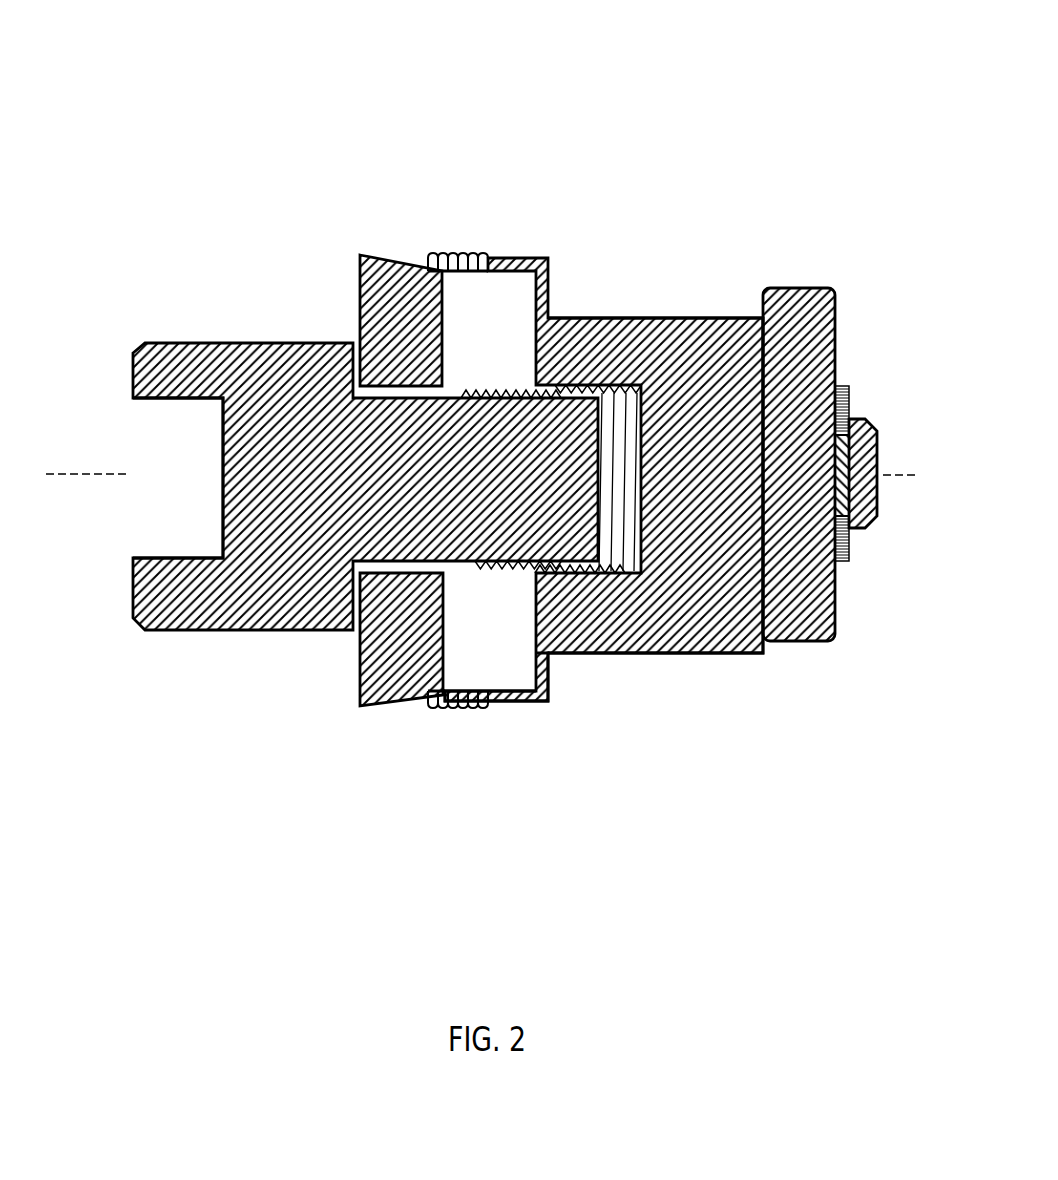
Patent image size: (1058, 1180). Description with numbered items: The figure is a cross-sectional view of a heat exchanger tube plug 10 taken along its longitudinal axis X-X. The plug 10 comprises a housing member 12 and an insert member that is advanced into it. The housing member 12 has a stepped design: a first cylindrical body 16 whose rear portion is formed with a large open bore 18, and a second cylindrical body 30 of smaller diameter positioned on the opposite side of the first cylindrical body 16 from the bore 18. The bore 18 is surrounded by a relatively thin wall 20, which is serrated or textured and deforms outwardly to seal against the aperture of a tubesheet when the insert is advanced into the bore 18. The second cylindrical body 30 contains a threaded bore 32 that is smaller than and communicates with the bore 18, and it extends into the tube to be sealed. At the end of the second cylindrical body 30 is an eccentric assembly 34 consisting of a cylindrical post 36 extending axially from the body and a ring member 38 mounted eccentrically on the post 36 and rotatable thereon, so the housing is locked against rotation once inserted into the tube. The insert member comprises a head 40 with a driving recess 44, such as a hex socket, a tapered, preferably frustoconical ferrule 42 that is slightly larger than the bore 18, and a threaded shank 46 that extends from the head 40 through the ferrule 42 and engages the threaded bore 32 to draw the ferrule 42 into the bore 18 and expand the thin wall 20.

The heat exchanger tube plug 10 is at (522, 108).
The housing member 12 is at (500, 252).
The first cylindrical body 16 is at (540, 662).
The open bore 18 is at (462, 282).
The thin wall 20 is at (440, 700).
The second cylindrical body 30 is at (632, 645).
The threaded bore 32 is at (612, 420).
The eccentric assembly 34 is at (793, 279).
The cylindrical post 36 is at (863, 512).
The ring member 38 is at (832, 378).
The head 40 is at (267, 622).
The tapered ferrule 42 is at (400, 687).
The driving recess 44 is at (133, 527).
The threaded shank 46 is at (556, 428).